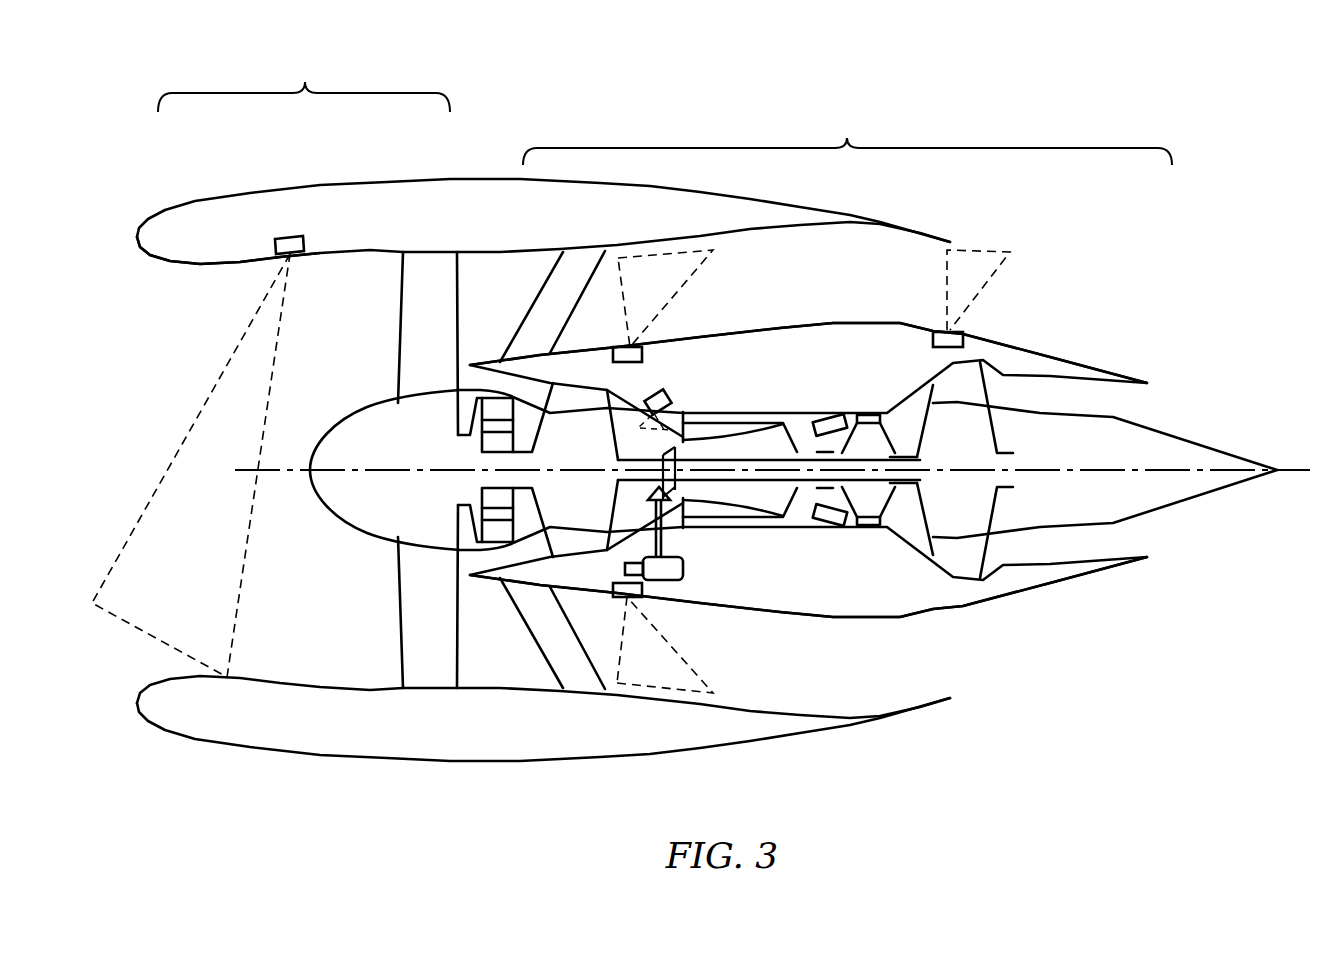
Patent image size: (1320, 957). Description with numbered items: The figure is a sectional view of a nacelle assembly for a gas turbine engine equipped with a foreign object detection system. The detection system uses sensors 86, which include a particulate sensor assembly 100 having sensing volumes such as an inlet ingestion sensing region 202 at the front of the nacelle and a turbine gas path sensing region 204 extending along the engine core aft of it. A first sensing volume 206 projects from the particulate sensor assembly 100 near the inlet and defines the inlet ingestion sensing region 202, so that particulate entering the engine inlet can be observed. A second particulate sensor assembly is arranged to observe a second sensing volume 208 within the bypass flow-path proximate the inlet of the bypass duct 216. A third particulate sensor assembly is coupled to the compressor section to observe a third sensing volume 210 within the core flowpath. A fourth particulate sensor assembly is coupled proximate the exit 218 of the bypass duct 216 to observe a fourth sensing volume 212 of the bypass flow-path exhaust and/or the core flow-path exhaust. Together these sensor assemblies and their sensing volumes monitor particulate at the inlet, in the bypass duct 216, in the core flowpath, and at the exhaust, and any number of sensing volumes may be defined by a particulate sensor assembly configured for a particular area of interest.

The sensors 86 is at (294, 230).
The particulate sensor assembly 100 is at (302, 253).
The inlet ingestion sensing region 202 is at (304, 84).
The turbine gas path sensing region 204 is at (847, 136).
The first sensing volume 206 is at (223, 395).
The second sensing volume 208 is at (668, 258).
The third sensing volume 210 is at (690, 417).
The fourth sensing volume 212 is at (980, 277).
The bypass duct 216 is at (822, 285).
The exit of bypass duct 218 is at (938, 675).